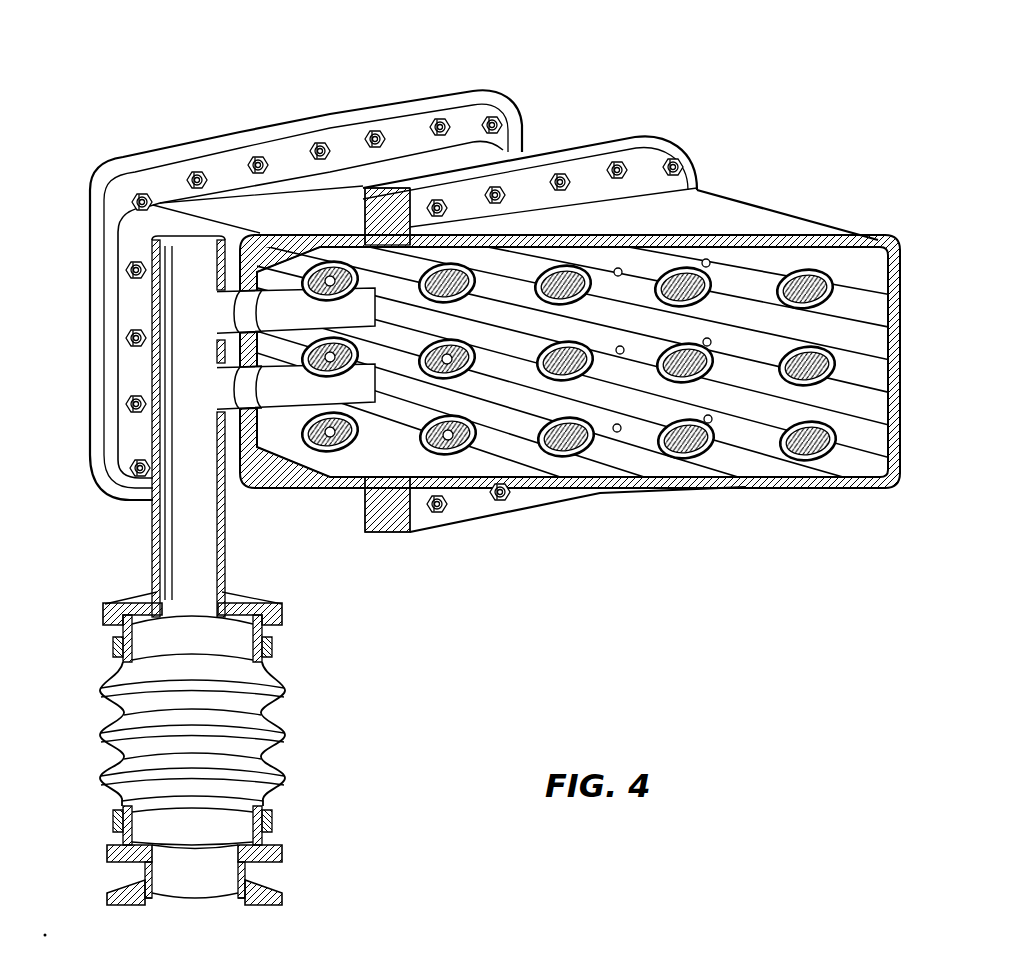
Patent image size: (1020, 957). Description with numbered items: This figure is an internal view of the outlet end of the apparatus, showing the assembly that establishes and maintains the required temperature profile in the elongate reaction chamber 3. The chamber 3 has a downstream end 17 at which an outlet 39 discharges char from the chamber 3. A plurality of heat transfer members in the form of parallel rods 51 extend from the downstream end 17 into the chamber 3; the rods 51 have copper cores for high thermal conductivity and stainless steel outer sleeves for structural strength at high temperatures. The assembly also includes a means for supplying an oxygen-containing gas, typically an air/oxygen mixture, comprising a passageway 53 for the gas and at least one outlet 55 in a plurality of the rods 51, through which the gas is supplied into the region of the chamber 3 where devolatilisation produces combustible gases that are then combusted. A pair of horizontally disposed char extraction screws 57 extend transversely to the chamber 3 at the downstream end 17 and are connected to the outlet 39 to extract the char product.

The reaction chamber 3 is at (872, 439).
The downstream end 17 is at (242, 102).
The outlet 39 is at (176, 556).
The rods 51 is at (757, 270).
The passageway 53 is at (450, 276).
The outlet 55 is at (707, 259).
The char extraction screws 57 is at (192, 320).